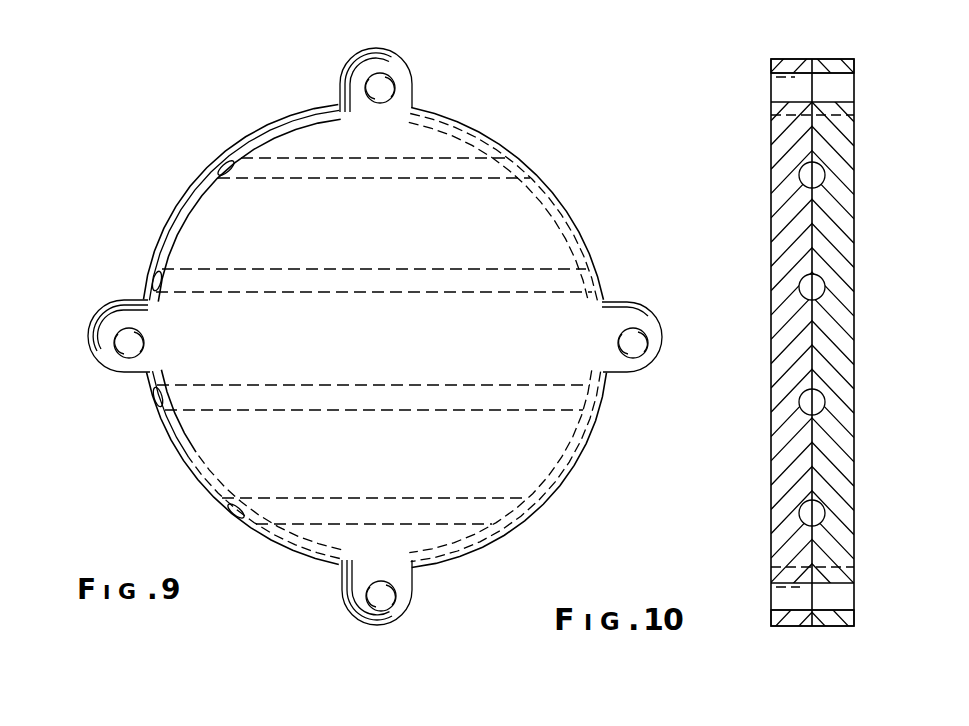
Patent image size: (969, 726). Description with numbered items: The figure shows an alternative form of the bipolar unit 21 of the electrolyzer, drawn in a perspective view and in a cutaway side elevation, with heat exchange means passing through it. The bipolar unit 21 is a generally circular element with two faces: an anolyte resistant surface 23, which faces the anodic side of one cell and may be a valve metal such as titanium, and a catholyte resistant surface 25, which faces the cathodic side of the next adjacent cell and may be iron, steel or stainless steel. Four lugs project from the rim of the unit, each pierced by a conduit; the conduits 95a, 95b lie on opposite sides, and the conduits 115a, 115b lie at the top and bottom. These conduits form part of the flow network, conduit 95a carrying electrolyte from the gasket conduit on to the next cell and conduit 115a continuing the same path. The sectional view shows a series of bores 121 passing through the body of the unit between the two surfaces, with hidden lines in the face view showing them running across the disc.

In FIG. 9, the bipolar unit 21 is at (156, 190).
In FIG. 10, the bipolar unit 21 is at (745, 497).
In FIG. 9, the anolyte resistant surface 23 is at (270, 140).
In FIG. 10, the anolyte resistant surface 23 is at (775, 230).
In FIG. 9, the catholyte resistant surface 25 is at (158, 235).
In FIG. 10, the catholyte resistant surface 25 is at (852, 456).
In FIG. 9, the conduit 95a is at (661, 327).
In FIG. 9, the conduit 95b is at (100, 357).
In FIG. 9, the conduit 115a is at (350, 60).
In FIG. 10, the conduit 115a is at (790, 58).
In FIG. 9, the conduit 115b is at (357, 622).
In FIG. 10, the conduit 115b is at (780, 626).
In FIG. 9, the holes 121 is at (220, 166).
In FIG. 10, the holes 121 is at (802, 176).